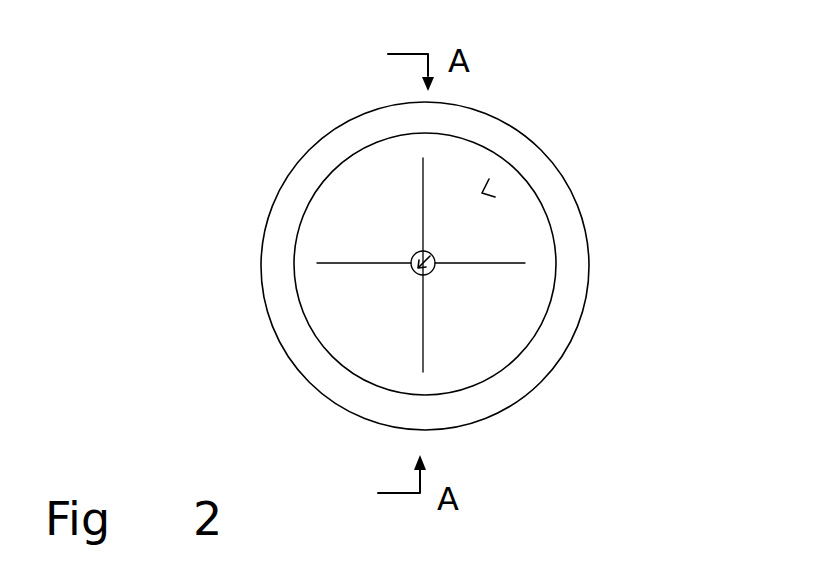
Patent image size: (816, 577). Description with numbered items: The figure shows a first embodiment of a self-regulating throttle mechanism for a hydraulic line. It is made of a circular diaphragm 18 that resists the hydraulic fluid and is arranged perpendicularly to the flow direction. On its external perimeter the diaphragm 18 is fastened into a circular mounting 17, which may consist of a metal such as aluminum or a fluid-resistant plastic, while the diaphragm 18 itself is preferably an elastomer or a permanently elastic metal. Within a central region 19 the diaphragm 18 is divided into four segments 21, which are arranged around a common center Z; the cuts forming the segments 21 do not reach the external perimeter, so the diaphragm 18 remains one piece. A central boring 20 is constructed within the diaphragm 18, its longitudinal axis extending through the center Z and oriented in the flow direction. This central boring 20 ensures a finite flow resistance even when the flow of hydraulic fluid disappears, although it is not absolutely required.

The circular mounting 17 is at (495, 395).
The circular diaphragm 18 is at (322, 243).
The central region 19 is at (482, 193).
The central boring 20 is at (412, 270).
The segments 21 is at (362, 188).
The center Z is at (434, 258).